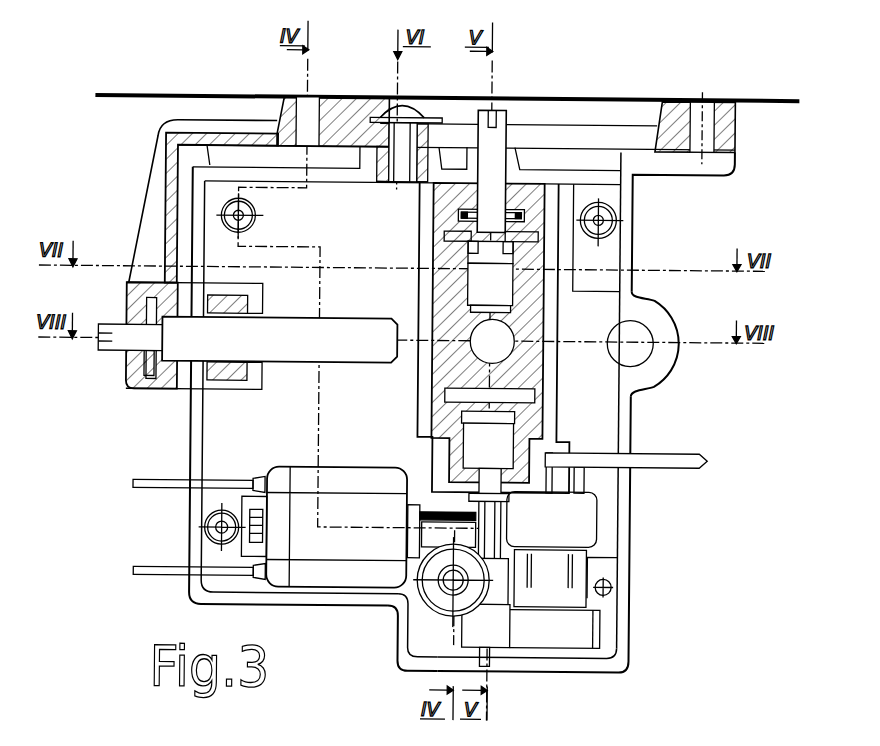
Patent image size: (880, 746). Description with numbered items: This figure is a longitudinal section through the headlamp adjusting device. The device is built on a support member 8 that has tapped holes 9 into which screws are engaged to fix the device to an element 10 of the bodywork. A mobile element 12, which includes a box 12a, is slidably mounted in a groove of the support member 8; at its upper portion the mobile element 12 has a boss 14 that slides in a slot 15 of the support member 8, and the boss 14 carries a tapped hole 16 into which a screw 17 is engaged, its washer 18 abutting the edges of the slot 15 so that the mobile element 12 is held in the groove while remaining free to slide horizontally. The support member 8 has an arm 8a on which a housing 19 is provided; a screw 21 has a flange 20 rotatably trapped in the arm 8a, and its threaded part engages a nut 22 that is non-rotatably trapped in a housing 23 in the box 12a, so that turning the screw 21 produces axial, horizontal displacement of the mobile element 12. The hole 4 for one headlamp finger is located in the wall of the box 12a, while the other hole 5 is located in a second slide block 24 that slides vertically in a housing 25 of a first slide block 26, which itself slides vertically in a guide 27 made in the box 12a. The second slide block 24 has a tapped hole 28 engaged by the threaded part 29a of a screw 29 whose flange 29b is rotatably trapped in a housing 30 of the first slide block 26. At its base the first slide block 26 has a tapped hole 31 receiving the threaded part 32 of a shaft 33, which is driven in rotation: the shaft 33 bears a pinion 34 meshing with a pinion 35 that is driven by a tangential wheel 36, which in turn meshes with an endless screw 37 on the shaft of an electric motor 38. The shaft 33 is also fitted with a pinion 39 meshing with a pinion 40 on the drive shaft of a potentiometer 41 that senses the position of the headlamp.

The hole 4 is at (640, 334).
The hole 5 is at (492, 341).
The support member 8 is at (664, 114).
The arm 8a is at (148, 219).
The tapped holes 9 is at (722, 122).
The element of the bodywork 10 is at (605, 98).
The mobile element 12 is at (642, 237).
The box 12a is at (634, 432).
The boss 14 is at (439, 134).
The slot 15 is at (348, 118).
The tapped hole 16 is at (390, 189).
The screw 17 is at (380, 112).
The washer 18 is at (430, 120).
The housing 19 is at (130, 362).
The flange 20 is at (152, 384).
The screw 21 is at (307, 354).
The nut 22 is at (240, 378).
The housing 23 is at (255, 300).
The second slide block 24 is at (525, 380).
The housing 25 is at (530, 241).
The first slide block 26 is at (440, 240).
The guide 27 is at (422, 384).
The tapped hole 28 is at (469, 254).
The screw 29 is at (498, 137).
The threaded part 29a is at (503, 290).
The flange 29b is at (457, 216).
The housing 30 is at (518, 210).
The tapped hole 31 is at (462, 418).
The threaded part 32 is at (472, 445).
The shaft 33 is at (498, 532).
The pinion 34 is at (503, 592).
The pinion 35 is at (447, 605).
The tangential wheel 36 is at (416, 611).
The endless screw 37 is at (420, 505).
The electric motor 38 is at (342, 577).
The pinion 39 is at (495, 642).
The pinion 40 is at (570, 642).
The potentiometer 41 is at (585, 529).